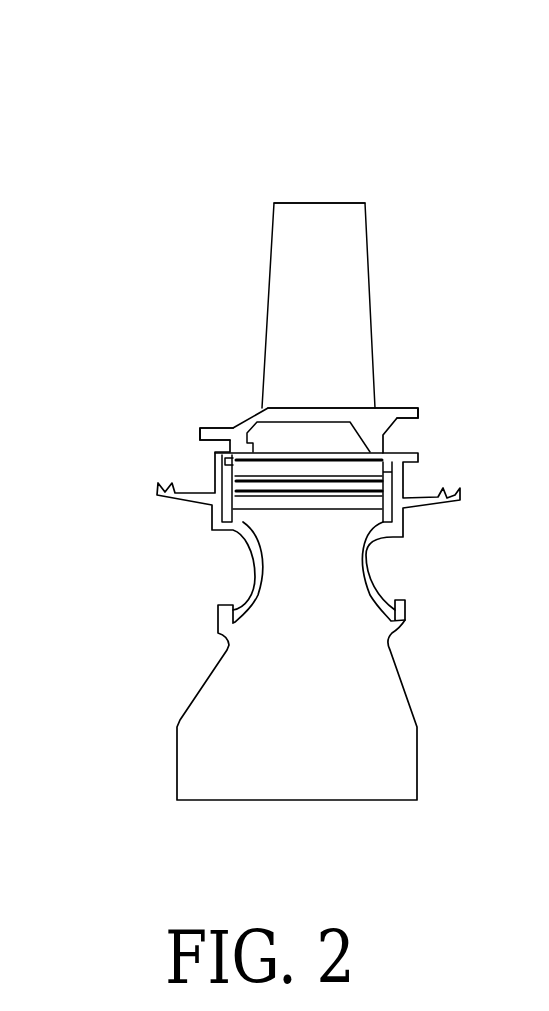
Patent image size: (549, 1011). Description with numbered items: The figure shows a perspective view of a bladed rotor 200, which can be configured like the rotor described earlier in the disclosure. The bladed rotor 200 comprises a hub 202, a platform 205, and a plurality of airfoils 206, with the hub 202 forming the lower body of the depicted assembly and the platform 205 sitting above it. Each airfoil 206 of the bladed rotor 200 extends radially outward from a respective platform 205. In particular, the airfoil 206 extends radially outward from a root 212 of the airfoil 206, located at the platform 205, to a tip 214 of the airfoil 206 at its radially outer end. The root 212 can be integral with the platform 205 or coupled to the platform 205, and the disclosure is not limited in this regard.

The bladed rotor 200 is at (111, 103).
The hub 202 is at (329, 721).
The platform 205 is at (233, 428).
The airfoil 206 is at (340, 322).
The root 212 is at (303, 407).
The tip 214 is at (315, 202).